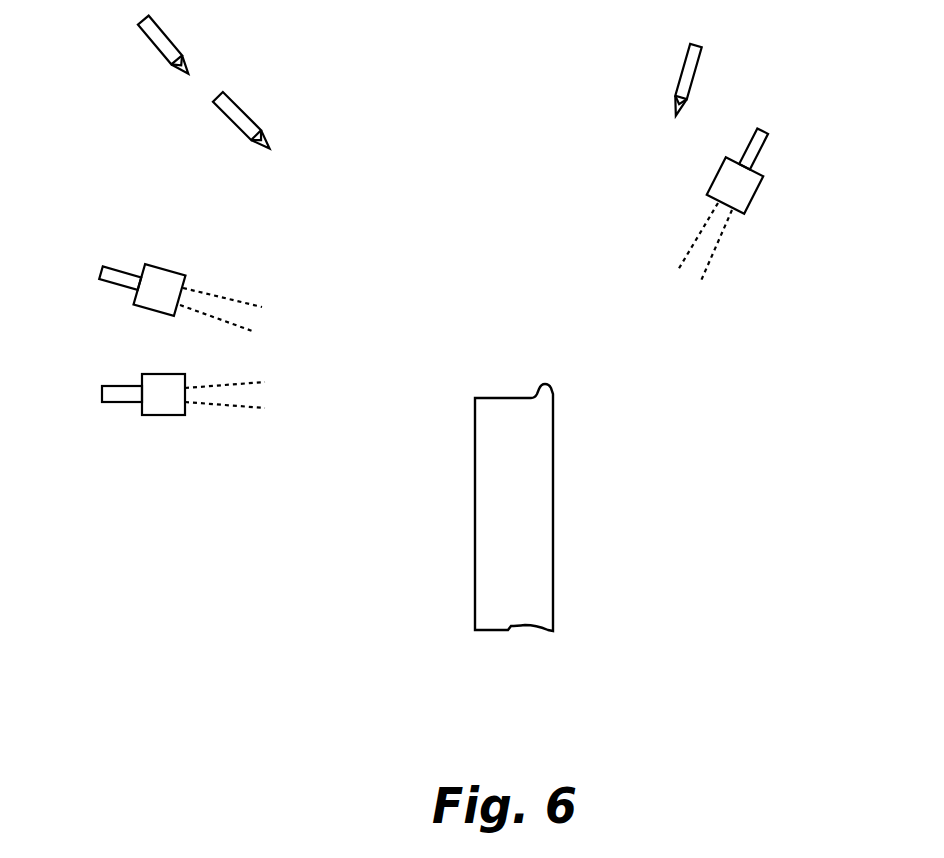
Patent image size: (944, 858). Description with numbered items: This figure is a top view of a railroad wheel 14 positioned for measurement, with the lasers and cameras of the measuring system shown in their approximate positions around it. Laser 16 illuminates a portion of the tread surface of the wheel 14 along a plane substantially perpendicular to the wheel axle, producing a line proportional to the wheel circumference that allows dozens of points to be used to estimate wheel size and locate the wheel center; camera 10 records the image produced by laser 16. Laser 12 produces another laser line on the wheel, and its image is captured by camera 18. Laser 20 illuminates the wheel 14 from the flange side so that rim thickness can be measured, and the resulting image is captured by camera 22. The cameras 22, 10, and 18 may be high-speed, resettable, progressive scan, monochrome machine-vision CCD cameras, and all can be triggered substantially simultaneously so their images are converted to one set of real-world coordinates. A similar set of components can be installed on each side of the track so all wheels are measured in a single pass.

The camera 10 is at (144, 264).
The laser 12 is at (176, 31).
The railroad wheel 14 is at (473, 549).
The laser 16 is at (255, 118).
The camera 18 is at (161, 418).
The laser 20 is at (700, 79).
The camera 22 is at (757, 199).